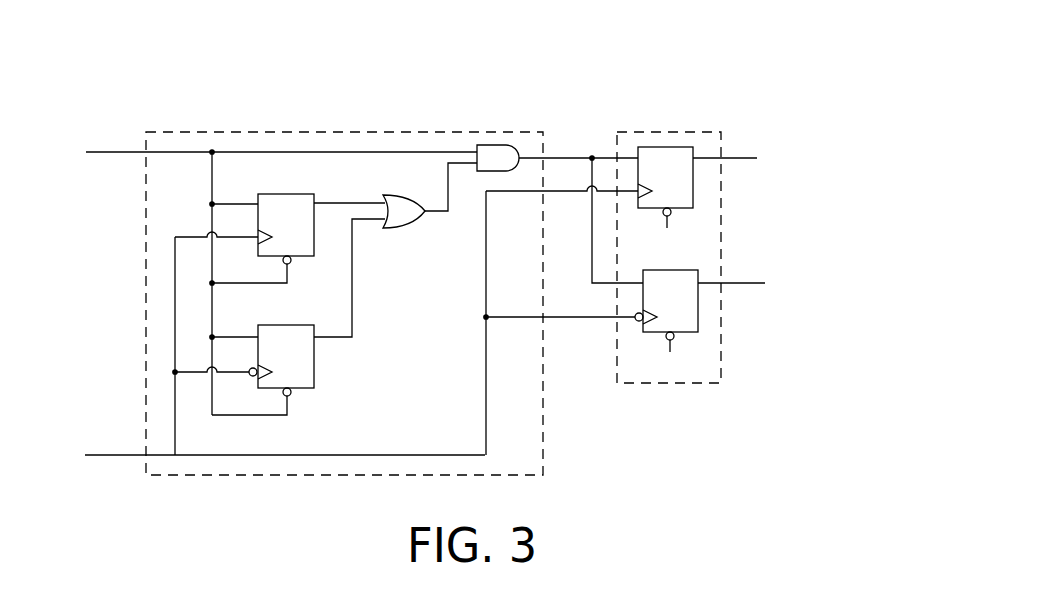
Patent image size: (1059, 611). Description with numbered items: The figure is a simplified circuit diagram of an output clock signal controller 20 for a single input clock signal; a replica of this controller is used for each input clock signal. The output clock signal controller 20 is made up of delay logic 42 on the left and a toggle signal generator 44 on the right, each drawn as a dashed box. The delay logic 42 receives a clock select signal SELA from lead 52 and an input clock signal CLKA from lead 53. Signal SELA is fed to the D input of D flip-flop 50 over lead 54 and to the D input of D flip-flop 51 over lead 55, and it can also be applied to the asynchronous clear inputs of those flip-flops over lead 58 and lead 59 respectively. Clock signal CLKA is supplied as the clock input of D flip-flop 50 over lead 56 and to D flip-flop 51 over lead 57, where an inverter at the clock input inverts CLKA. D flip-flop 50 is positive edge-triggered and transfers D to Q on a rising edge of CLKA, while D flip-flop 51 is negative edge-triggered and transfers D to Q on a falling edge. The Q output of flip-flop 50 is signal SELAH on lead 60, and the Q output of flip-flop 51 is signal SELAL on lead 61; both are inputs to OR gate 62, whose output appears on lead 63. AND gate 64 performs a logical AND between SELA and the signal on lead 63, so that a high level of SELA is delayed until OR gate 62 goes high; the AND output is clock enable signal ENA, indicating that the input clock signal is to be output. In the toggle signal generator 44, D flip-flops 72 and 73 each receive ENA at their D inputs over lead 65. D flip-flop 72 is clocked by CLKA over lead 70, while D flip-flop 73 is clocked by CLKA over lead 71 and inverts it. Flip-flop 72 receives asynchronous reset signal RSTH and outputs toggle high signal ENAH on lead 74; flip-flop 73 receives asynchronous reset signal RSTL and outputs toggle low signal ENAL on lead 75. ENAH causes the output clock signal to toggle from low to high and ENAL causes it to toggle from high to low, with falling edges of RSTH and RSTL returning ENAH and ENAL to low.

The output clock signal controller 20 is at (812, 43).
The delay logic 42 is at (265, 130).
The toggle signal generator 44 is at (668, 130).
The D flip-flop 50 is at (297, 231).
The D flip-flop 51 is at (297, 363).
The lead 52 is at (121, 151).
The lead 53 is at (112, 455).
The lead 54 is at (238, 203).
The lead 55 is at (245, 336).
The lead 56 is at (238, 236).
The lead 57 is at (237, 371).
The lead 58 is at (238, 283).
The lead 59 is at (237, 415).
The lead 60 is at (330, 204).
The lead 61 is at (331, 336).
The OR gate 62 is at (404, 211).
The lead 63 is at (443, 212).
The AND gate 64 is at (498, 158).
The lead 65 is at (568, 159).
The lead 70 is at (508, 192).
The lead 71 is at (511, 317).
The D flip-flop 72 is at (677, 184).
The D flip-flop 73 is at (682, 308).
The lead 74 is at (738, 157).
The lead 75 is at (743, 282).